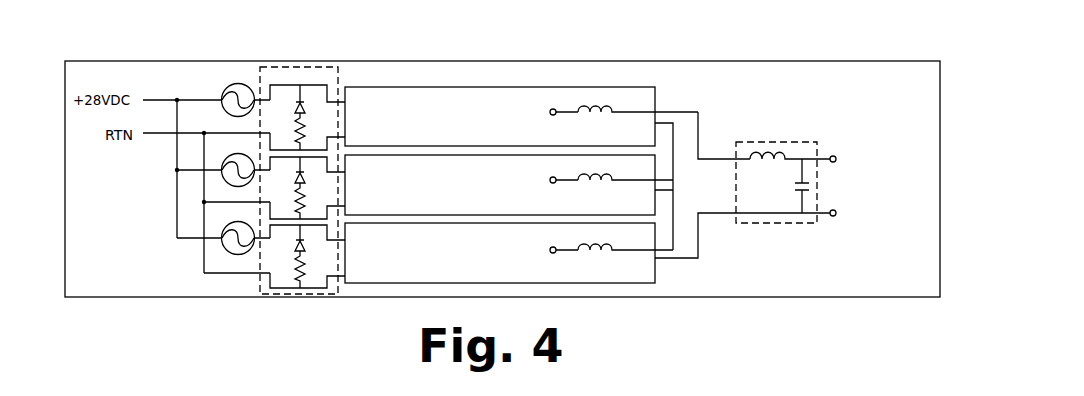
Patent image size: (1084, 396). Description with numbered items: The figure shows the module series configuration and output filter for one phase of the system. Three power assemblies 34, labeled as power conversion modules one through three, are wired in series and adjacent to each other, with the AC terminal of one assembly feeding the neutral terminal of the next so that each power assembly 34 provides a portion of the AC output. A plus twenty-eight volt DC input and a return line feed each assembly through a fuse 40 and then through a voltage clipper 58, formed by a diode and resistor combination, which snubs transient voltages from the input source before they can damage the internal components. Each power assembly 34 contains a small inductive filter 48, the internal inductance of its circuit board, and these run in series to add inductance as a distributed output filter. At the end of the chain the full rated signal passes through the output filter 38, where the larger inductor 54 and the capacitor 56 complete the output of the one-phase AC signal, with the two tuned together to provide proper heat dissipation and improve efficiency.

The power assembly 34 is at (623, 87).
The output filter 38 is at (809, 167).
The fuse board 40 is at (228, 63).
The inductive filter 48 is at (592, 212).
The inductor 54 is at (752, 155).
The capacitor 56 is at (797, 214).
The voltage clipper 58 is at (284, 65).